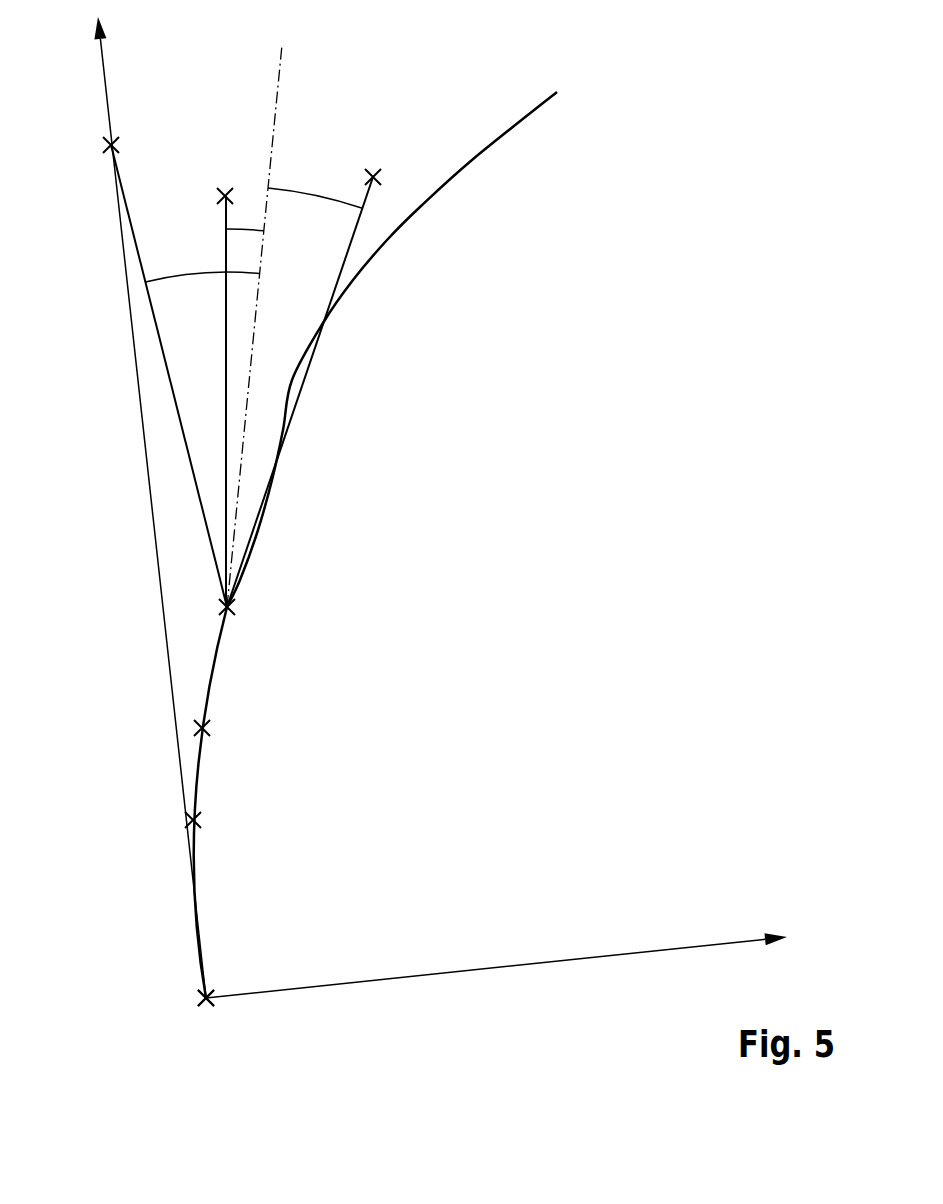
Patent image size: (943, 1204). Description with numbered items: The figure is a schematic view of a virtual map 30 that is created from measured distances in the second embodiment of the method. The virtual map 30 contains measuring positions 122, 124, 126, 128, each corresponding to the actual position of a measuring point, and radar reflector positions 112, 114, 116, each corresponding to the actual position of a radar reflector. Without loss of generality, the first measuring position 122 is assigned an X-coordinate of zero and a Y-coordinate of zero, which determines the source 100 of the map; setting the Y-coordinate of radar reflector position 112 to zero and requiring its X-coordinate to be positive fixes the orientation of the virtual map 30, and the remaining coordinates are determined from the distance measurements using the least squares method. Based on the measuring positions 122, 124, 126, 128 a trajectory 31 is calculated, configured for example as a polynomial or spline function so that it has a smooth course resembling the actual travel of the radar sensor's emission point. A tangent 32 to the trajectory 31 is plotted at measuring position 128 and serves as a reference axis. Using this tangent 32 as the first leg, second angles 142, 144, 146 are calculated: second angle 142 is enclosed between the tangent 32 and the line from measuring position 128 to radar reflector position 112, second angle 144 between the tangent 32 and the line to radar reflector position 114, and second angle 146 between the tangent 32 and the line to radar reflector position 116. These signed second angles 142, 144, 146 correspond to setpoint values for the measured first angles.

The virtual map 30 is at (144, 441).
The trajectory 31 is at (470, 163).
The tangent 32 is at (284, 62).
The source 100 is at (200, 998).
The radar reflector position 112 is at (110, 146).
The radar reflector position 114 is at (226, 190).
The radar reflector position 116 is at (378, 178).
The measuring position 122 is at (207, 1005).
The measuring position 124 is at (201, 822).
The measuring position 126 is at (210, 728).
The measuring position 128 is at (235, 607).
The second angle 142 is at (167, 279).
The second angle 144 is at (244, 229).
The second angle 146 is at (317, 196).